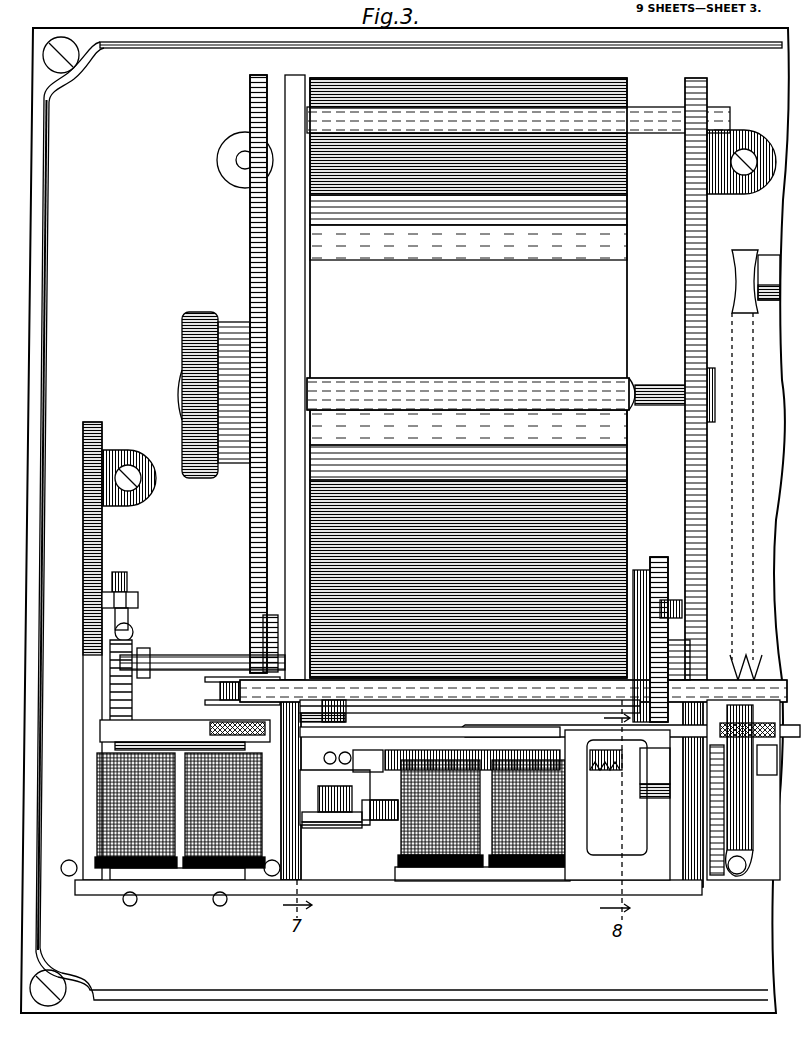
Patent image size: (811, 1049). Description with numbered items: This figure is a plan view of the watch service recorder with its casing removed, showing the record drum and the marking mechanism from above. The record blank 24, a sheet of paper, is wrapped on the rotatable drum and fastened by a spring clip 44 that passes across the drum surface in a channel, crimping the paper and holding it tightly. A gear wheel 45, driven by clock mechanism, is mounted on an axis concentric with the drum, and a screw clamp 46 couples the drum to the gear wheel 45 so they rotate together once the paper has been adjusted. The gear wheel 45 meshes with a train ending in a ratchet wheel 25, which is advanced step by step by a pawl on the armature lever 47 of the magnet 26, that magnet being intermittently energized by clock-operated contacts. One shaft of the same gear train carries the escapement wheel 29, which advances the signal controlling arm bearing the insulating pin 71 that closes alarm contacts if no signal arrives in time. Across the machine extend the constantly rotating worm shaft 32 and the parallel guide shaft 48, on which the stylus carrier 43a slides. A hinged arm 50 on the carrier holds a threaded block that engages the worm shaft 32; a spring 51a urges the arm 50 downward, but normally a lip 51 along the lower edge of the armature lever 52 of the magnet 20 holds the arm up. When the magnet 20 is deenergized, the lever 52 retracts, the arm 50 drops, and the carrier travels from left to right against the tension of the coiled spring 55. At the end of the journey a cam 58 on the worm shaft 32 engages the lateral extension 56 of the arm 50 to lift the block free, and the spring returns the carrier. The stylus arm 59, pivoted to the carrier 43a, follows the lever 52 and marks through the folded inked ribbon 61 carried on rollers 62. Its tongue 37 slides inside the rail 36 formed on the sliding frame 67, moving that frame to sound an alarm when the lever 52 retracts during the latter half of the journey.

The magnet 20 is at (486, 812).
The record blank 24 is at (468, 378).
The ratchet wheel 25 is at (134, 632).
The magnet 26 is at (195, 870).
The escapement wheel 29 is at (658, 562).
The worm shaft 32 is at (612, 770).
The rail 36 is at (522, 735).
The tongue 37 is at (348, 718).
The stylus carrier 43a is at (352, 830).
The spring clip 44 is at (428, 392).
The gear wheel 45 is at (250, 103).
The screw clamp 46 is at (208, 318).
The armature lever 47 is at (170, 735).
The guide shaft 48 is at (382, 822).
The hinged arm 50 is at (310, 805).
The lip 51 is at (670, 800).
The spring 51a is at (335, 822).
The armature lever 52 is at (430, 748).
The coiled spring 55 is at (695, 660).
The lateral extension 56 is at (375, 785).
The cam 58 is at (668, 790).
The stylus arm 59 is at (334, 706).
The inked ribbon 61 is at (470, 697).
The rollers 62 is at (215, 688).
The sliding frame 67 is at (617, 806).
The insulating pin 71 is at (757, 780).